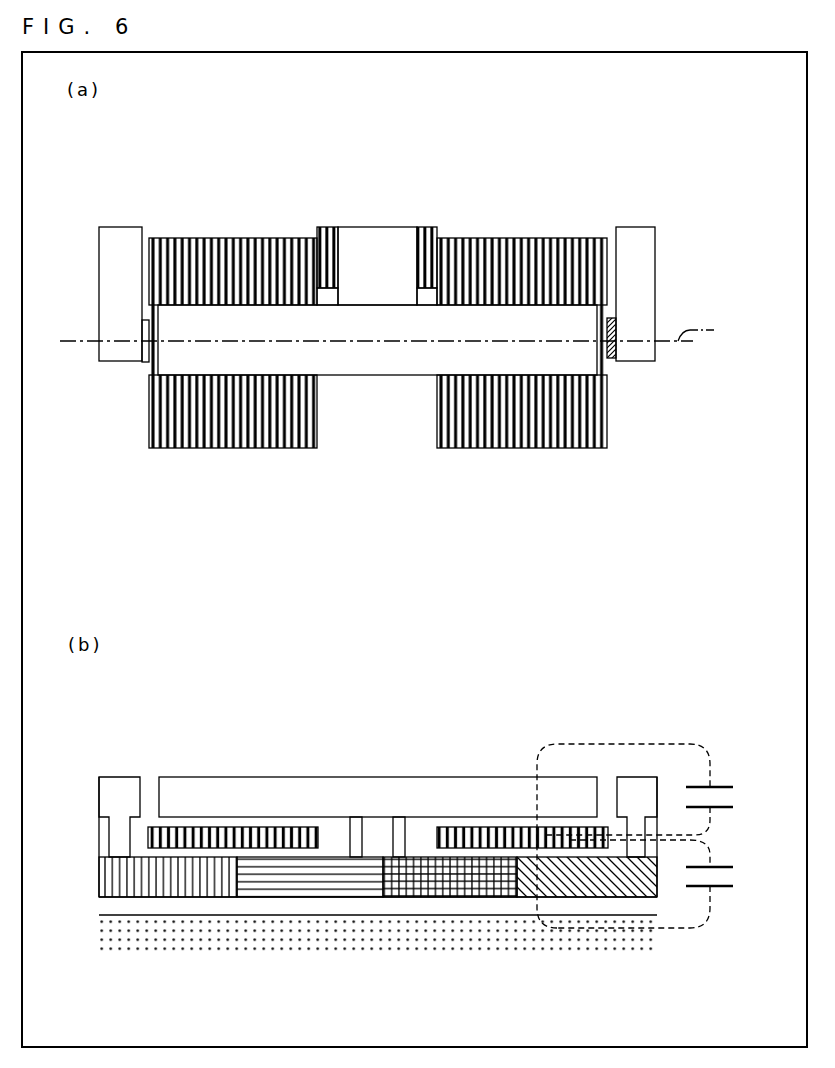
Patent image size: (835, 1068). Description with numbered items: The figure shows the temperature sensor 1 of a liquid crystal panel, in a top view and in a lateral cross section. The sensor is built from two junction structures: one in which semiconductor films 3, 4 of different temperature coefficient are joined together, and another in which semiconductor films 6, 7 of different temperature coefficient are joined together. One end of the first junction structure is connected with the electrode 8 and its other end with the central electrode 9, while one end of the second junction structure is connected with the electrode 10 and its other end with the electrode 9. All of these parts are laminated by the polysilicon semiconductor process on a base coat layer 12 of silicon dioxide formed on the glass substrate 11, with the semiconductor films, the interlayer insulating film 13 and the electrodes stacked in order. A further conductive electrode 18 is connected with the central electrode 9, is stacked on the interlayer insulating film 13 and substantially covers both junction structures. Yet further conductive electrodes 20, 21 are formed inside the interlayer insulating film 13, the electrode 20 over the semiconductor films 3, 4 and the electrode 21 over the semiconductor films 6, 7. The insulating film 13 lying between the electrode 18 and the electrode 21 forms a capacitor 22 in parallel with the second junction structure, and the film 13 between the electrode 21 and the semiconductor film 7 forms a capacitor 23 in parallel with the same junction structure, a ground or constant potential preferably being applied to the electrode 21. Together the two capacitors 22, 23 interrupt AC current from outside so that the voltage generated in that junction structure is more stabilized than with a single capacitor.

The temperature sensor 1 is at (586, 173).
The semiconductor film 3 is at (170, 880).
The semiconductor film 4 is at (302, 880).
The semiconductor film 6 is at (452, 880).
The semiconductor film 7 is at (590, 880).
The electrode 8 is at (122, 227).
The electrode 9 is at (377, 227).
The electrode 10 is at (635, 227).
The glass substrate 11 is at (652, 940).
The base coat layer 12 is at (652, 905).
The interlayer insulating film 13 is at (335, 827).
The electrode 18 is at (378, 378).
The electrode 20 is at (228, 450).
The electrode 21 is at (520, 450).
The capacitor 22 is at (735, 798).
The capacitor 23 is at (735, 878).